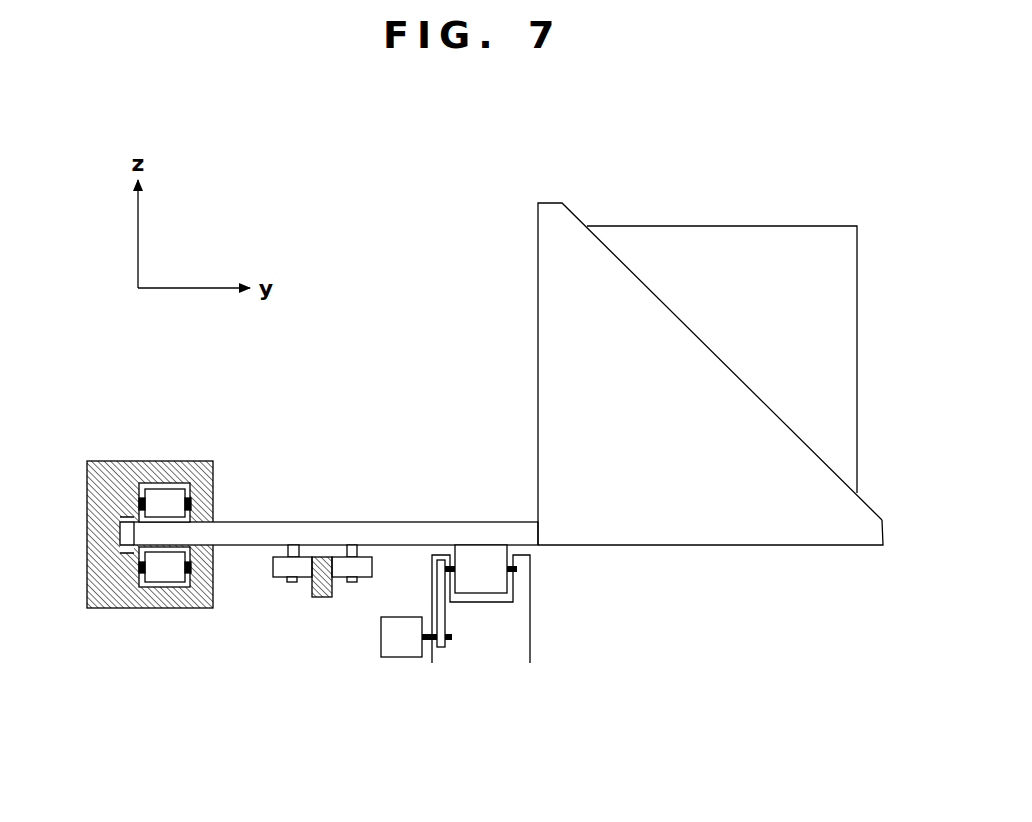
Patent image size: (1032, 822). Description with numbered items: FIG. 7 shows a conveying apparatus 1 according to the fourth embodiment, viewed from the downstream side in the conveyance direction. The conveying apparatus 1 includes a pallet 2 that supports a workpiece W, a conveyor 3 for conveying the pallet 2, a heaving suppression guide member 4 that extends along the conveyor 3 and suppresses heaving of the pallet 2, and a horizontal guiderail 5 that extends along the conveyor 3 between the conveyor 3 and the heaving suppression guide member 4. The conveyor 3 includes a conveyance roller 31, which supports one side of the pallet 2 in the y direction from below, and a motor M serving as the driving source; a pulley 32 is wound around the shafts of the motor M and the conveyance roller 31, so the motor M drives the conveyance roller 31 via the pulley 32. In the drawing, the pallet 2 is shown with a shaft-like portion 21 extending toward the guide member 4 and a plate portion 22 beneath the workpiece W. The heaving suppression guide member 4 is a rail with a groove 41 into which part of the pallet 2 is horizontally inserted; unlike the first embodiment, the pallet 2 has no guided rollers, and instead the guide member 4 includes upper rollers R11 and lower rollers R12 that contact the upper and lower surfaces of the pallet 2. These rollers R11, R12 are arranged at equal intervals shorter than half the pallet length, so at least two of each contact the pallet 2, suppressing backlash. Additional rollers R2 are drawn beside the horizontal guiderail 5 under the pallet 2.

The conveying apparatus 1 is at (255, 690).
The pallet 2 is at (508, 524).
The shaft portion 21 is at (358, 521).
The plate portion 22 is at (704, 546).
The conveyor 3 is at (486, 582).
The conveyance roller 31 is at (487, 548).
The pulley 32 is at (441, 648).
The motor M is at (403, 658).
The heaving suppression guide member 4 is at (110, 458).
The groove 41 is at (212, 520).
The upper roller R11 is at (168, 489).
The lower roller R12 is at (170, 585).
The bearing R2 is at (275, 578).
The horizontal guiderail 5 is at (323, 597).
The workpiece W is at (722, 224).